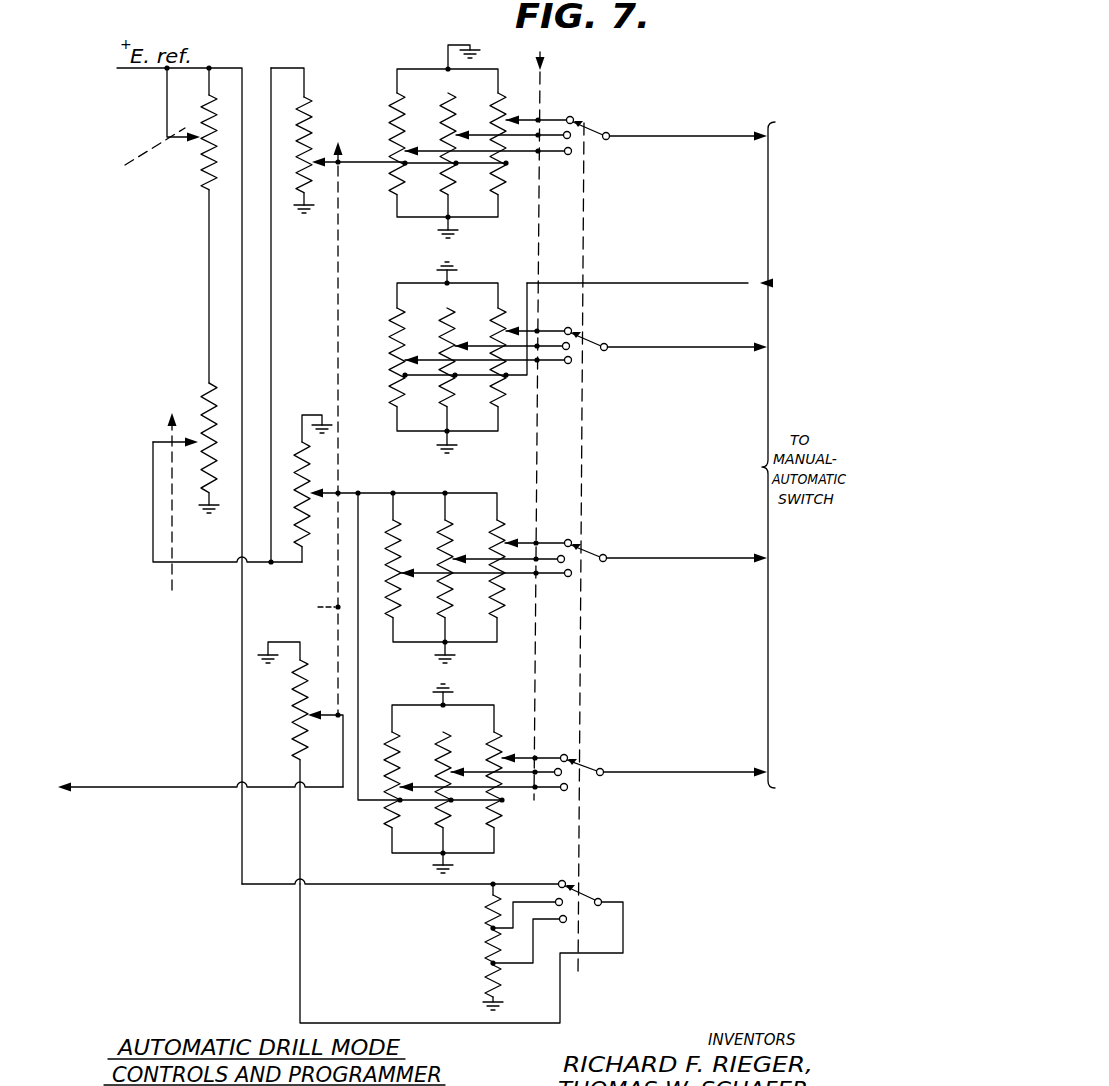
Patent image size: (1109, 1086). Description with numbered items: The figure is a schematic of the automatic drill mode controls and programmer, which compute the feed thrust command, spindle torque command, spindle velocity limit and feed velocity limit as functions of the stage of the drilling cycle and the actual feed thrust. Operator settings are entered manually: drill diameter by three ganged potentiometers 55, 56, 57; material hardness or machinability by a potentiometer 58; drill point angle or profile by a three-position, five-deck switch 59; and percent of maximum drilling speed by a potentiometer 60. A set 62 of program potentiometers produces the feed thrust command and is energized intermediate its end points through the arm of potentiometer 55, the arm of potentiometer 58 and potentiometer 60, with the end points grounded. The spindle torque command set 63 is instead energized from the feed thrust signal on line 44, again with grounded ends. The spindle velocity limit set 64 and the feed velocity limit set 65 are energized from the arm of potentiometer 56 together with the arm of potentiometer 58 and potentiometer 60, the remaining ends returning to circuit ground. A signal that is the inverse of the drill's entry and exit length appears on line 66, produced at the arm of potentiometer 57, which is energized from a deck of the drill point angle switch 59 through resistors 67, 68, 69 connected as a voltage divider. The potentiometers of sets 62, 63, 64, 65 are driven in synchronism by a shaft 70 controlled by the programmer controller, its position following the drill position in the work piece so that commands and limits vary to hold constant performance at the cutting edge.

The feed thrust signal line 44 is at (640, 283).
The drill diameter potentiometer 55 is at (307, 100).
The drill diameter potentiometer 56 is at (296, 440).
The drill diameter potentiometer 57 is at (295, 700).
The material hardness potentiometer 58 is at (204, 385).
The drill point angle switch 59 is at (600, 884).
The percent maximum drilling speed potentiometer 60 is at (201, 125).
The feed thrust command potentiometer set 62 is at (426, 85).
The spindle torque command potentiometer set 63 is at (418, 295).
The spindle velocity limit potentiometer set 64 is at (420, 508).
The feed velocity limit potentiometer set 65 is at (422, 721).
The inverse entry-exit length line 66 is at (260, 790).
The voltage divider resistor 67 is at (484, 910).
The voltage divider resistor 68 is at (484, 945).
The voltage divider resistor 69 is at (484, 980).
The programmer shaft 70 is at (540, 228).